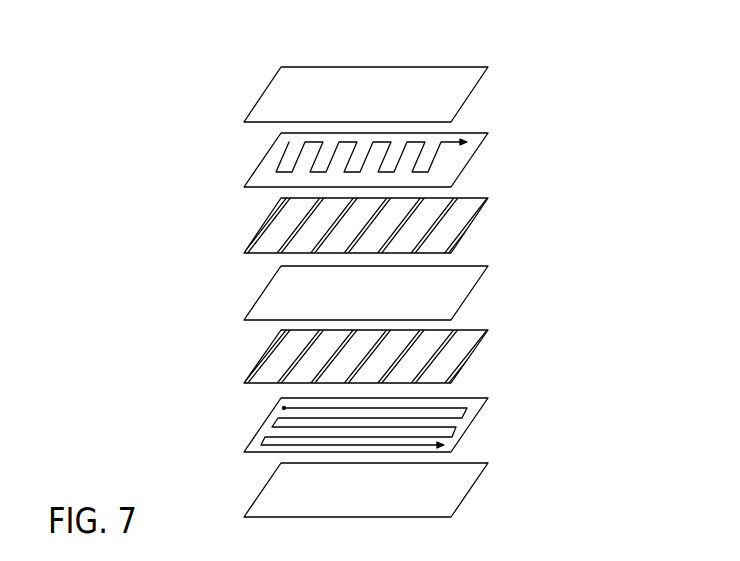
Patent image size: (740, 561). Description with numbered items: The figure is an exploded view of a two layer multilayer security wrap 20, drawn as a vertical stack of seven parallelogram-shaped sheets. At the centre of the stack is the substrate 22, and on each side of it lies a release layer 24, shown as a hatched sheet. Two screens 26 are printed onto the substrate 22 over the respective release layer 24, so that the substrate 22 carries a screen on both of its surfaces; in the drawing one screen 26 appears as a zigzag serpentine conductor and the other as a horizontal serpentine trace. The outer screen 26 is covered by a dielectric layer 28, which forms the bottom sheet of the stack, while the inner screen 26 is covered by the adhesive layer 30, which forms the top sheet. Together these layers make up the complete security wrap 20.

The multilayer security wrap 20 is at (185, 102).
The substrate 22 is at (457, 288).
The release layer 24 is at (475, 223).
The screen 26 is at (460, 162).
The dielectric layer 28 is at (453, 488).
The adhesive layer 30 is at (457, 85).